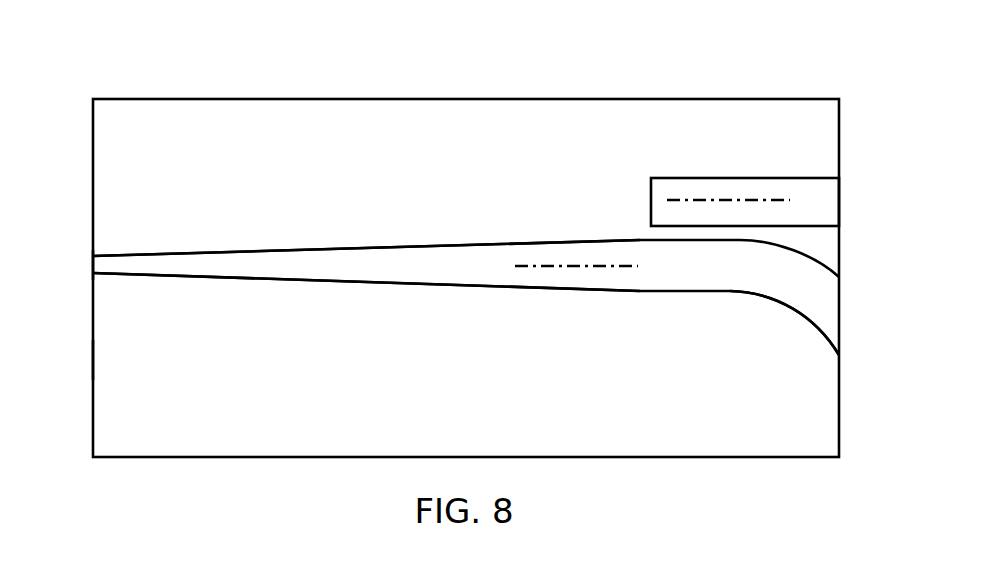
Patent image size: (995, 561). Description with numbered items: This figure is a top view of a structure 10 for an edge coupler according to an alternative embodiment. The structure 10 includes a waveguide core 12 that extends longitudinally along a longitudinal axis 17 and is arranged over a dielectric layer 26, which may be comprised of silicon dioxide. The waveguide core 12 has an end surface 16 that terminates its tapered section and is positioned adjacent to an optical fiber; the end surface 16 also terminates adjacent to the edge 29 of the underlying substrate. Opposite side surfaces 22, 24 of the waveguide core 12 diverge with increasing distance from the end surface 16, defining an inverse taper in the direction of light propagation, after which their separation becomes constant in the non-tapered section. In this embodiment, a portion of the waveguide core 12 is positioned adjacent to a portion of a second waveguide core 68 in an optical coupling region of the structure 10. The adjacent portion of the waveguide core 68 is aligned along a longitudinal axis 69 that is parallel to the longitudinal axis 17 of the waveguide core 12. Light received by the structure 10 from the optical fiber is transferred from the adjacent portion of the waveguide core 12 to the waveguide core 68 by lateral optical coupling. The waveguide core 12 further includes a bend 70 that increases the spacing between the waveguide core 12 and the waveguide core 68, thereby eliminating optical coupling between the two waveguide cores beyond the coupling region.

The structure 10 is at (102, 60).
The waveguide core 12 is at (511, 307).
The end surface 16 is at (93, 270).
The longitudinal axis 17 is at (550, 265).
The side surface 22 is at (310, 248).
The side surface 24 is at (320, 283).
The dielectric layer 26 is at (158, 417).
The edge 29 is at (93, 362).
The waveguide core 68 is at (743, 190).
The longitudinal axis 69 is at (700, 200).
The bend 70 is at (809, 294).